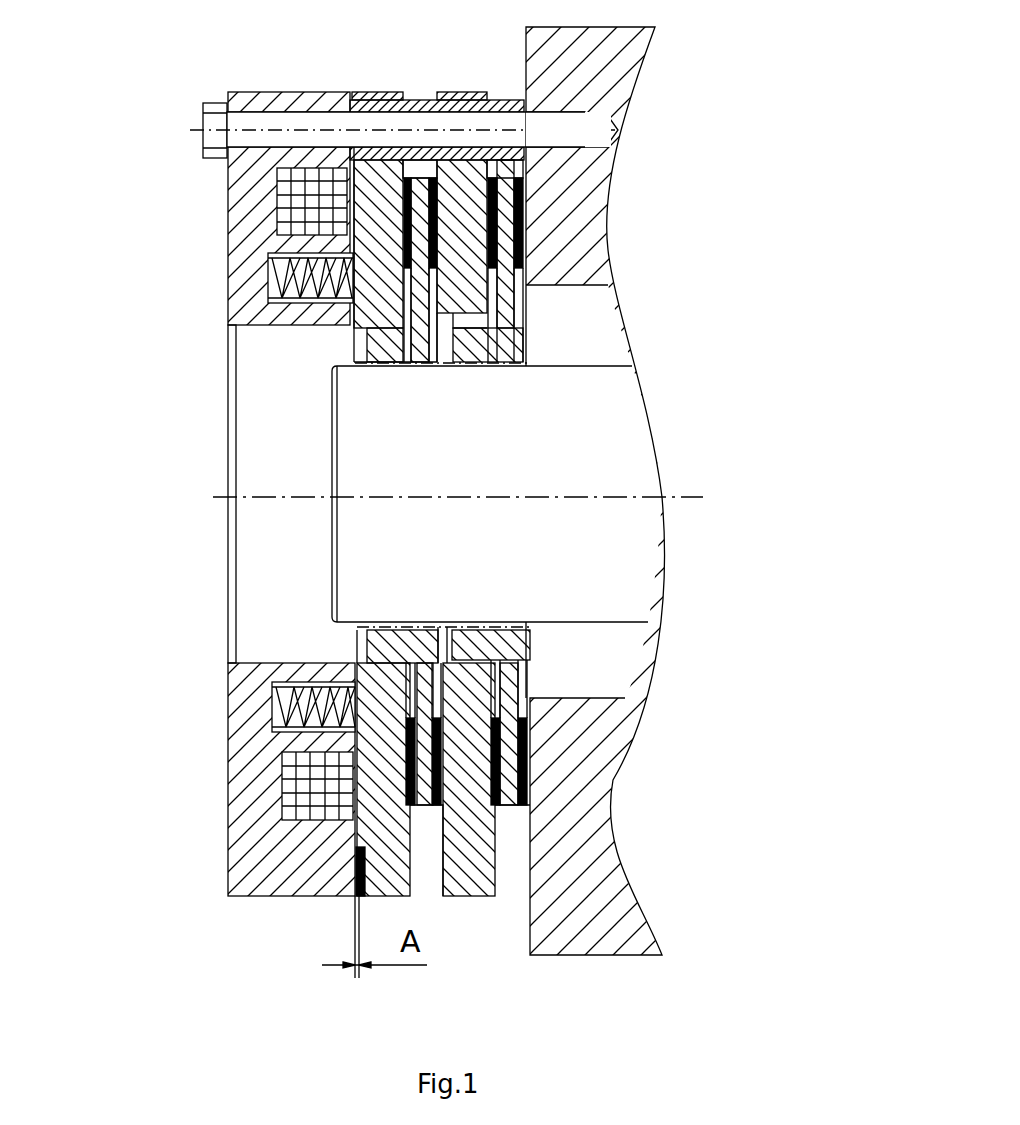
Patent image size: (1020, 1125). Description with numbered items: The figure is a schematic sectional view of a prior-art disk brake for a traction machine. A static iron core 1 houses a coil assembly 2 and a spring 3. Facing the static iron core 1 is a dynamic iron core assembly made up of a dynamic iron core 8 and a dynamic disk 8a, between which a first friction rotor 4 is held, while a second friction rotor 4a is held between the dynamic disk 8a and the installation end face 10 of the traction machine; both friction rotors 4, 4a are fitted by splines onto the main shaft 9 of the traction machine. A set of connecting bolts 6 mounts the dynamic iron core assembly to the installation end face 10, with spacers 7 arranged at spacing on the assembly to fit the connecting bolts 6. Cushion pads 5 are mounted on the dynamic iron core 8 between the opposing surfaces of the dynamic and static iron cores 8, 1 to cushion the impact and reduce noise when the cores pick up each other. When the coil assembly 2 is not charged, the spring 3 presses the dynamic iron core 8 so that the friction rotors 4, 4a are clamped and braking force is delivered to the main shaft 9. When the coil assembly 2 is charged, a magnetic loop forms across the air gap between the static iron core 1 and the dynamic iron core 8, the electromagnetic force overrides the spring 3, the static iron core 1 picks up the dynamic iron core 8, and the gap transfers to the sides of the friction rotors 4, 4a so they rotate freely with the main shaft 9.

The static iron core 1 is at (233, 203).
The coil assembly 2 is at (288, 216).
The spring 3 is at (300, 285).
The first friction rotor 4 is at (370, 355).
The second friction rotor 4a is at (487, 343).
The cushion pad 5 is at (353, 877).
The connecting bolt 6 is at (548, 125).
The spacer 7 is at (447, 153).
The dynamic iron core 8 is at (383, 710).
The dynamic disk 8a is at (470, 817).
The main shaft of traction machine 9 is at (590, 465).
The installation end face of traction machine 10 is at (587, 93).